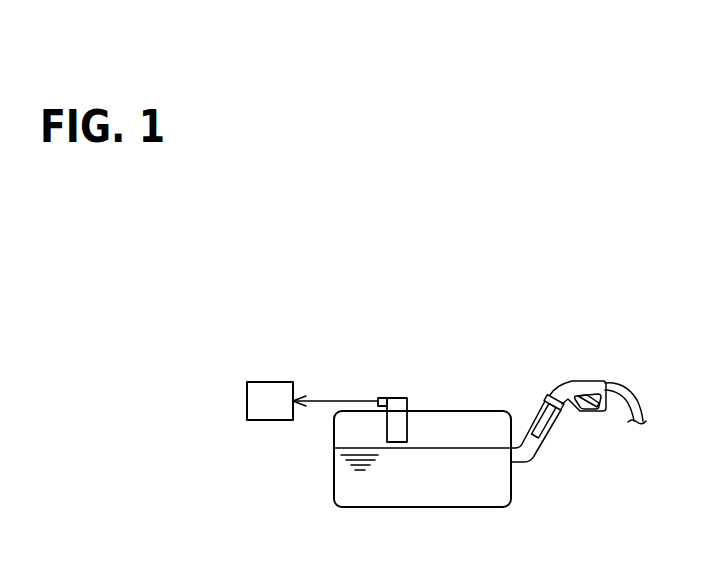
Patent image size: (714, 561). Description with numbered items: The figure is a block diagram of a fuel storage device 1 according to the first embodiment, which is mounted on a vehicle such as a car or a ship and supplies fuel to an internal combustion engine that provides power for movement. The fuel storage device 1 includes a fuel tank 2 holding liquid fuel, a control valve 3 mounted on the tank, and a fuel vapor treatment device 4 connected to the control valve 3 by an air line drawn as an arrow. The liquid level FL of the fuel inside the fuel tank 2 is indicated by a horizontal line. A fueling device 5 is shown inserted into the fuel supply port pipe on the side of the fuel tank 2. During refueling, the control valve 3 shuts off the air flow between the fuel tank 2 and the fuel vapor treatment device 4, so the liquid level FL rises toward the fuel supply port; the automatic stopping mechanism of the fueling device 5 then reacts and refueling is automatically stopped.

The fuel storage device 1 is at (431, 429).
The fuel tank 2 is at (433, 411).
The control valve 3 is at (394, 398).
The fuel vapor treatment device 4 is at (247, 400).
The fueling device 5 is at (639, 392).
The liquid level FL is at (334, 448).